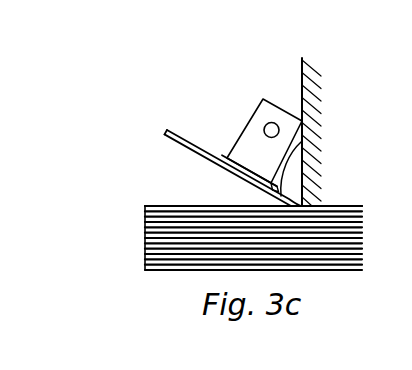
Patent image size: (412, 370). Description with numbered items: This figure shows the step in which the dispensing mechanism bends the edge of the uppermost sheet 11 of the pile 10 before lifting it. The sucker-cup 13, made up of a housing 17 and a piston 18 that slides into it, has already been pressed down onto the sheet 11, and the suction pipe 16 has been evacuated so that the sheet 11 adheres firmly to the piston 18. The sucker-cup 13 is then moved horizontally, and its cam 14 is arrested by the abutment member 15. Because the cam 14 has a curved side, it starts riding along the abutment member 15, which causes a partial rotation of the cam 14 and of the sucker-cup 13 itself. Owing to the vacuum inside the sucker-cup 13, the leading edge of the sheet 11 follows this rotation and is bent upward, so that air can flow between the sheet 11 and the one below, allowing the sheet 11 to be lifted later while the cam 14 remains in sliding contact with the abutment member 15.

The pile 10 is at (357, 244).
The sheet 11 is at (356, 205).
The sucker-cup 13 is at (254, 116).
The cam 14 is at (289, 173).
The abutment member 15 is at (313, 105).
The suction pipe 16 is at (271, 122).
The housing 17 is at (222, 156).
The piston 18 is at (209, 153).